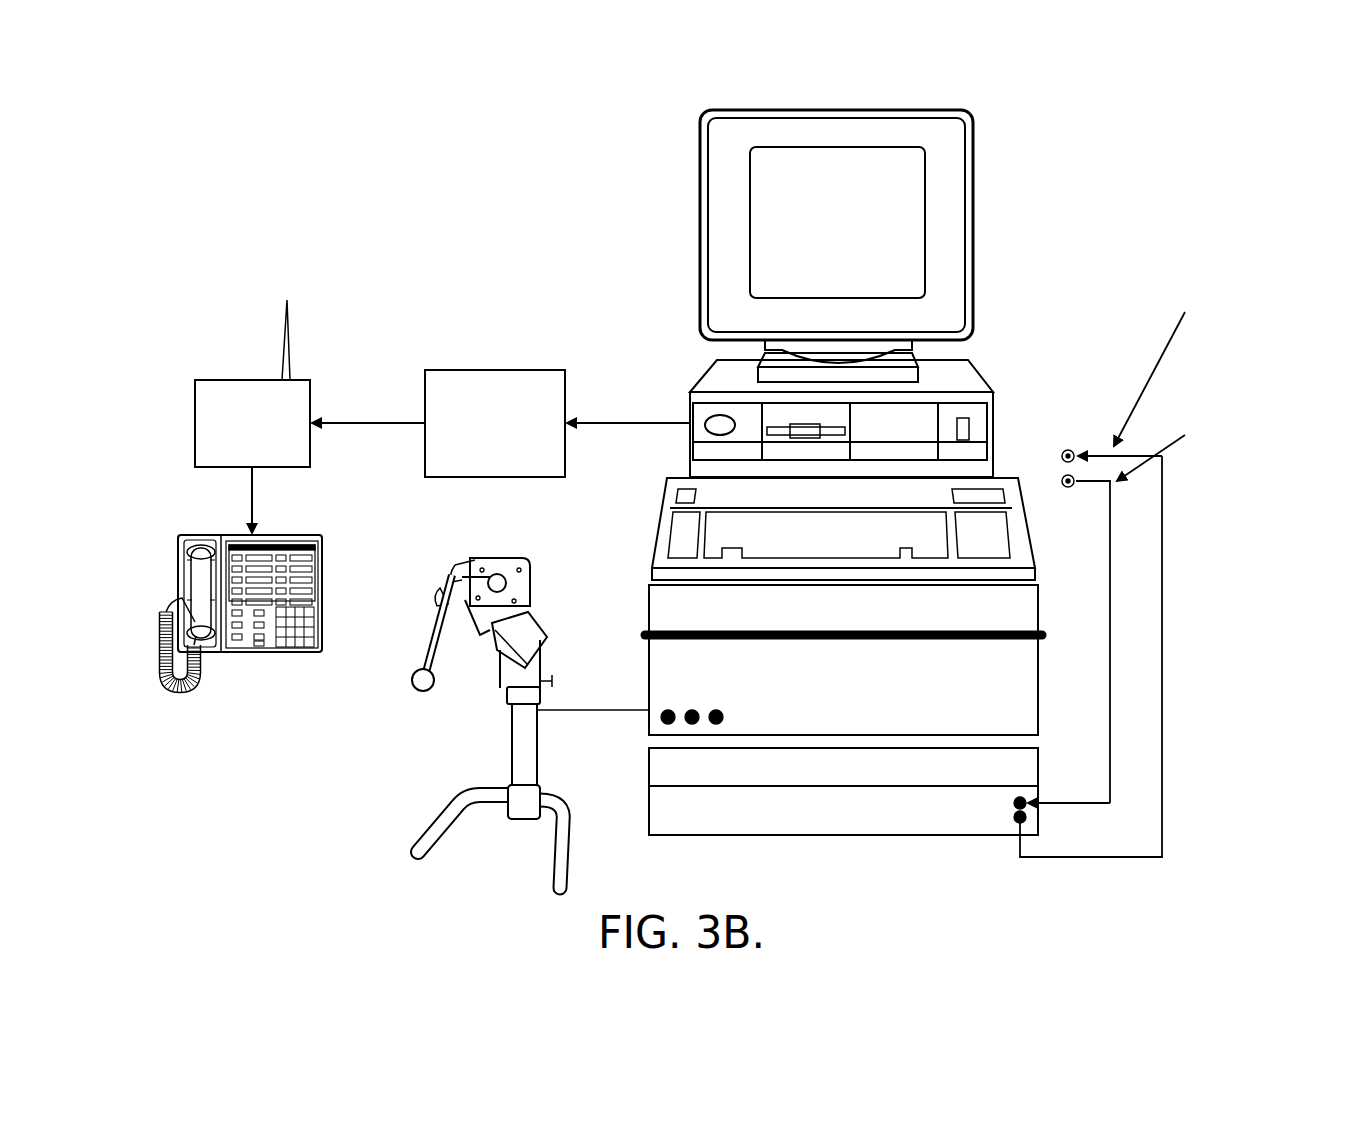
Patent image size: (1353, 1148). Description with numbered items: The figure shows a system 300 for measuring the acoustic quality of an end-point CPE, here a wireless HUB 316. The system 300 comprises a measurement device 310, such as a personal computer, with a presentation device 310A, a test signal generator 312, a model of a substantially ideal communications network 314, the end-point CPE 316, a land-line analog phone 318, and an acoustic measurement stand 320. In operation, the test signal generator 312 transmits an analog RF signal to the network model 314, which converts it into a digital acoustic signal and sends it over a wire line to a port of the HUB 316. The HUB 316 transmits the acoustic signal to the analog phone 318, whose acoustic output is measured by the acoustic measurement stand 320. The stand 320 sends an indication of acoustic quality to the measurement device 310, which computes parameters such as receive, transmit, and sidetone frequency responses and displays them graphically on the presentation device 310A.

The system 300 is at (1172, 198).
The presentation device 310A is at (898, 110).
The measurement device 310 is at (985, 385).
The test signal generator 312 is at (792, 836).
The model of a substantially ideal communications network 314 is at (495, 370).
The end-point CPE 316 is at (195, 433).
The land-line analog phone 318 is at (252, 653).
The acoustic measurement stand 320 is at (545, 625).